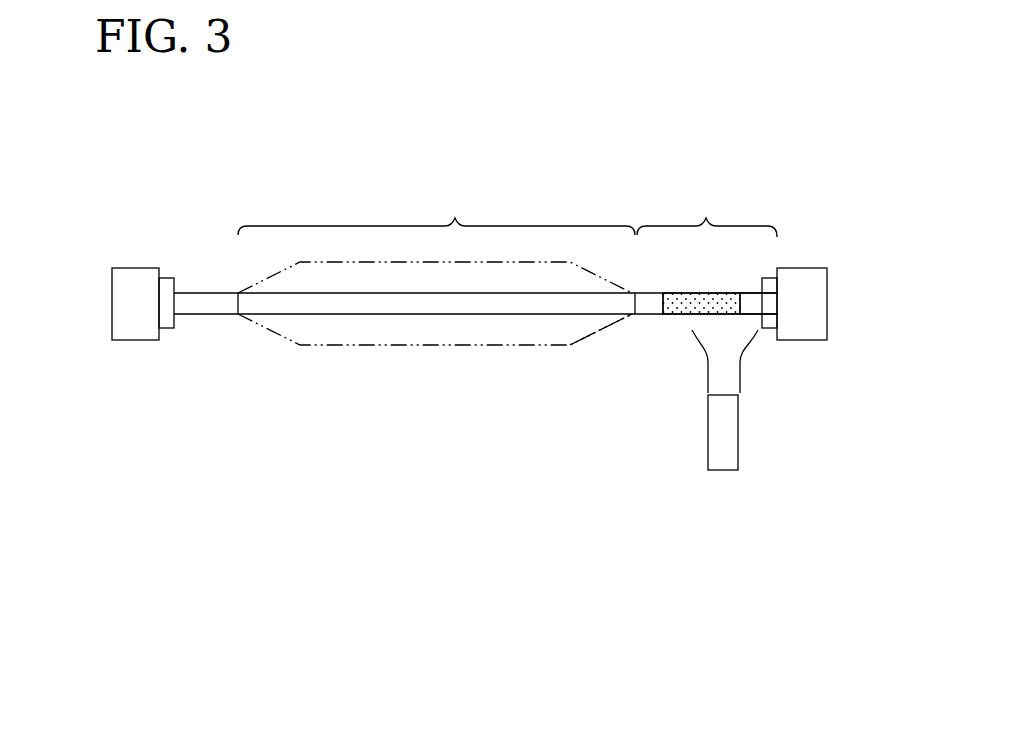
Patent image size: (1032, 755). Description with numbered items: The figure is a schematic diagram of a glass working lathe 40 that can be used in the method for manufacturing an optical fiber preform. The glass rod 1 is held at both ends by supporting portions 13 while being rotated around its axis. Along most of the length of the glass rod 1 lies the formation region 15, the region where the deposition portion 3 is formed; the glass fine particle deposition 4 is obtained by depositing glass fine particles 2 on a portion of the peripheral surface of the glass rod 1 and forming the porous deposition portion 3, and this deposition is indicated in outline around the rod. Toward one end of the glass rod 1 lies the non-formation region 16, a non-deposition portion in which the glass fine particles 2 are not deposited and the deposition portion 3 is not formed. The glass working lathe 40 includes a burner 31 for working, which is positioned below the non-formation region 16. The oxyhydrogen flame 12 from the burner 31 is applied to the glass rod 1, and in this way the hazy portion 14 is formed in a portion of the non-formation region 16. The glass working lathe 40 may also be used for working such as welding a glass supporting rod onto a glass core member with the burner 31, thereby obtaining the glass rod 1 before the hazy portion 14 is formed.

The glass rod 1 is at (207, 293).
The glass fine particles 2 is at (520, 338).
The deposition portion 3 is at (432, 347).
The glass fine particle deposition 4 is at (290, 354).
The oxyhydrogen flame 12 is at (707, 362).
The supporting portions 13 is at (112, 317).
The hazy portion 14 is at (685, 297).
The formation region 15 is at (436, 211).
The non-formation region 16 is at (707, 212).
The burner for working 31 is at (738, 428).
The glass working lathe 40 is at (797, 233).